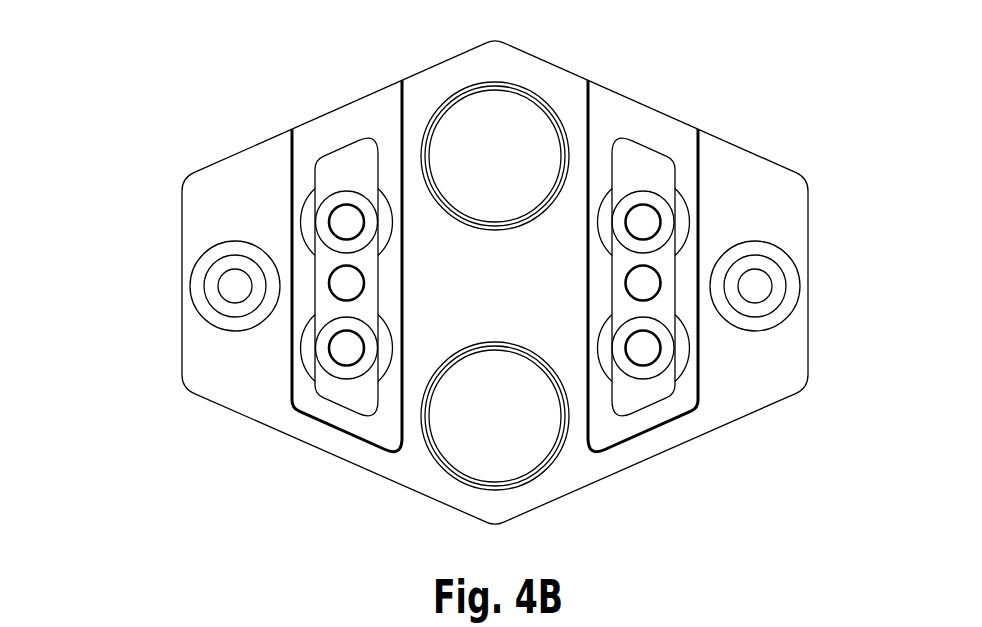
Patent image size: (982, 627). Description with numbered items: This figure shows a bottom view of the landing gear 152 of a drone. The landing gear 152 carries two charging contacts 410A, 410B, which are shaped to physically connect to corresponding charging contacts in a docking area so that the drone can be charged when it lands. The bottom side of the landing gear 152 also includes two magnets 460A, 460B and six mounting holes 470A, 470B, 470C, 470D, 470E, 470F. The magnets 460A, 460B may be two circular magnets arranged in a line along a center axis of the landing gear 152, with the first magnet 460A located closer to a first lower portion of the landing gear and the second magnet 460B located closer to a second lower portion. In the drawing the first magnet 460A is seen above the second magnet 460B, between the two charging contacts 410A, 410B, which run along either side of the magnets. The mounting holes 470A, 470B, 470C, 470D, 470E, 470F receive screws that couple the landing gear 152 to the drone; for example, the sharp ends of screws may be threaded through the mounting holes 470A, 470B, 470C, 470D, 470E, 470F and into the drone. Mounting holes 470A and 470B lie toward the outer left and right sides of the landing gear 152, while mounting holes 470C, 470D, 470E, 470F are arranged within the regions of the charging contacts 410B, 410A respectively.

The landing gear 152 is at (97, 148).
The charging contact 410A is at (648, 113).
The charging contact 410B is at (340, 113).
The first magnet 460A is at (502, 82).
The second magnet 460B is at (512, 342).
The mounting hole 470A is at (193, 283).
The mounting hole 470B is at (798, 278).
The mounting hole 470C is at (320, 211).
The mounting hole 470D is at (326, 375).
The mounting hole 470E is at (672, 212).
The mounting hole 470F is at (667, 371).